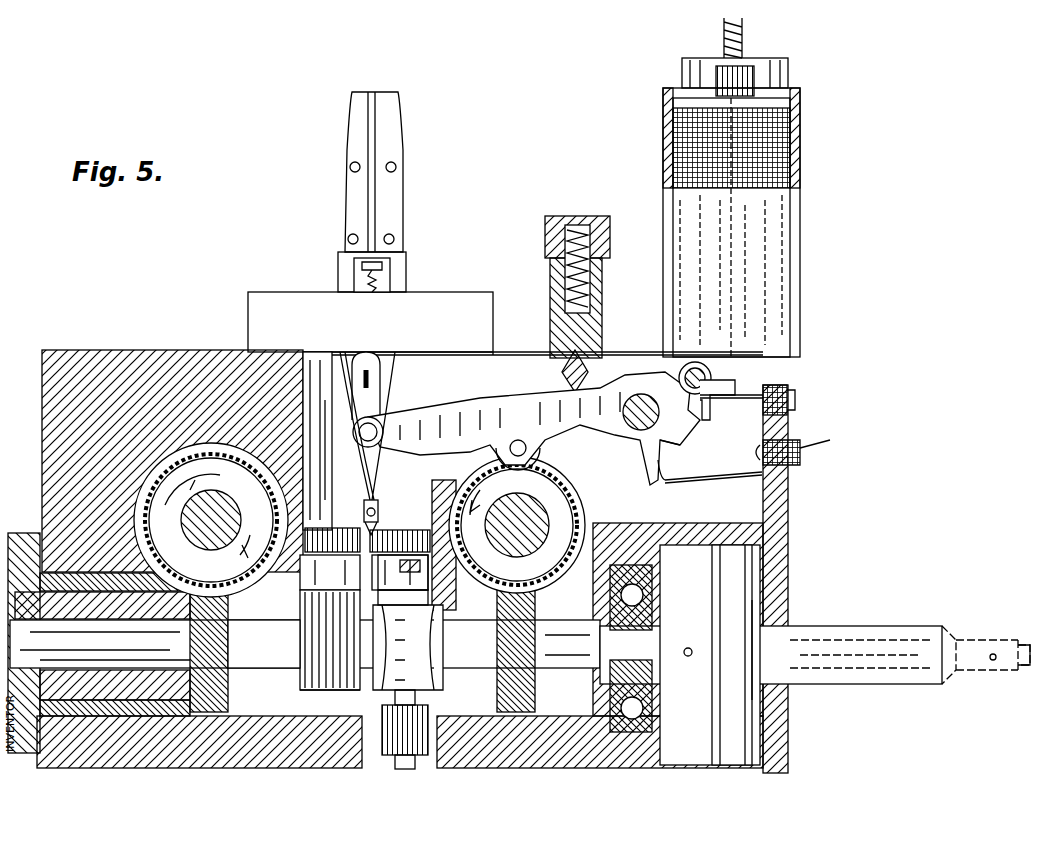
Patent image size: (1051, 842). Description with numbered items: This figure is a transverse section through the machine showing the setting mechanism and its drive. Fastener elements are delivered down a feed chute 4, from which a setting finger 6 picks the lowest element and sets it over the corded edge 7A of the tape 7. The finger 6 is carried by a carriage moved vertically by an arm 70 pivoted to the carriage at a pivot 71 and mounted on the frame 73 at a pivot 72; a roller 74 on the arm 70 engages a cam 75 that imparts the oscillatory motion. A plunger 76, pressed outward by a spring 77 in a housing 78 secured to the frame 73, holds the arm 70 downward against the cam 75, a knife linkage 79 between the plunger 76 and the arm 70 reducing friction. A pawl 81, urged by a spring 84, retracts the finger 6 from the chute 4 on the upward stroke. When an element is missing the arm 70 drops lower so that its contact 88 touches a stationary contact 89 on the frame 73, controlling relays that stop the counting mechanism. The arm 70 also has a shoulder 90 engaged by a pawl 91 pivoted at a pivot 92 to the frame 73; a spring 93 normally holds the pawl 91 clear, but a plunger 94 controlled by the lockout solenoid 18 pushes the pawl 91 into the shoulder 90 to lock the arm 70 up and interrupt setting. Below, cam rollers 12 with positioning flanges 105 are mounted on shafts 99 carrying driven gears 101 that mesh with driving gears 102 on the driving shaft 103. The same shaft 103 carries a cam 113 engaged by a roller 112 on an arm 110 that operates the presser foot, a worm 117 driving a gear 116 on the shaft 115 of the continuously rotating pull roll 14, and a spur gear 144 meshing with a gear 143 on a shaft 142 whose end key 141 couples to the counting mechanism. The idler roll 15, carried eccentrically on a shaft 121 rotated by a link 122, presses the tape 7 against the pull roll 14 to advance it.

The feed chute 4 is at (388, 205).
The setting finger 6 is at (378, 505).
The tape 7 is at (364, 582).
The corded edge 7A is at (381, 515).
The cam rollers 12 is at (322, 440).
The pull roll 14 is at (338, 530).
The idler roll 15 is at (410, 530).
The lockout solenoid 18 is at (775, 216).
The arm 70 is at (535, 405).
The pivot 71 is at (372, 428).
The pivot 72 is at (643, 395).
The frame 73 is at (612, 358).
The roller 74 is at (542, 455).
The cam 75 is at (525, 478).
The plunger 76 is at (552, 340).
The spring 77 is at (568, 304).
The housing 78 is at (600, 280).
The knife linkage 79 is at (560, 372).
The pawl 81 is at (395, 268).
The spring 84 is at (368, 288).
The contact 88 is at (660, 462).
The stationary contact 89 is at (680, 485).
The shoulder 90 is at (680, 430).
The pawl 91 is at (714, 405).
The pivot 92 is at (680, 372).
The spring 93 is at (765, 396).
The plunger 94 is at (763, 360).
The shafts 99 is at (380, 520).
The driven gears 101 is at (102, 644).
The driving gears 102 is at (228, 680).
The driving shaft 103 is at (160, 648).
The positioning flanges 105 is at (378, 470).
The arm 110 is at (382, 740).
The roller 112 is at (408, 760).
The cam 113 is at (438, 665).
The shaft 115 is at (300, 605).
The driven gear 116 is at (300, 640).
The worm 117 is at (305, 688).
The shaft 121 is at (405, 585).
The link 122 is at (430, 585).
The key 141 is at (1032, 655).
The shaft 142 is at (885, 660).
The gear 143 is at (735, 690).
The spur gear 144 is at (740, 660).